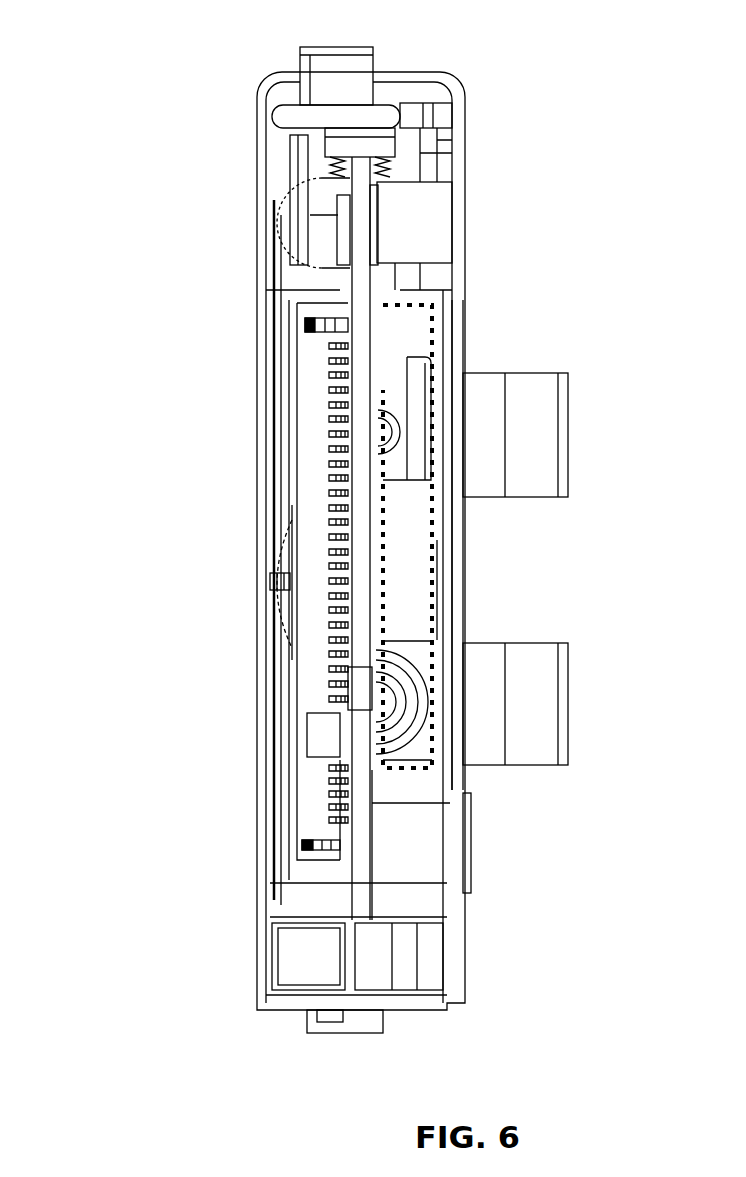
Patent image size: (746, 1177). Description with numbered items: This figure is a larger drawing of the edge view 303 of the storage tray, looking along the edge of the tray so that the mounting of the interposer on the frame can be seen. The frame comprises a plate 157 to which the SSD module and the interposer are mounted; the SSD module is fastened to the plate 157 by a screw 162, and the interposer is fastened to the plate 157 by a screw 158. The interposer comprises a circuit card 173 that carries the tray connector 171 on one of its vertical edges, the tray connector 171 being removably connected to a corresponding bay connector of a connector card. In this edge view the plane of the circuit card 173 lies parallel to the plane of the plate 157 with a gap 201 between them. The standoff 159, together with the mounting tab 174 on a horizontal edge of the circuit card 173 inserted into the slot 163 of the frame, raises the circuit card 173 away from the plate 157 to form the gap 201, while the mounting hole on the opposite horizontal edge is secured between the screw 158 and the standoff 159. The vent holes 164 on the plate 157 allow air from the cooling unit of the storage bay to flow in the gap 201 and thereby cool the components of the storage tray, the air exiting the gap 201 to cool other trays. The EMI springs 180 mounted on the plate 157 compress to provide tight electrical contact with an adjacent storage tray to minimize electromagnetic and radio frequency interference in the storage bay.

The edge view 303 is at (118, 104).
The screw 158 is at (323, 193).
The standoff 159 is at (437, 220).
The circuit card 173 is at (348, 337).
The tray connector 171 is at (352, 450).
The plate 157 is at (458, 343).
The EMI springs 180 is at (543, 423).
The screw 162 is at (277, 547).
The gap 201 is at (432, 543).
The vent holes 164 is at (470, 582).
The mounting tab 174 is at (343, 922).
The slot 163 is at (363, 980).